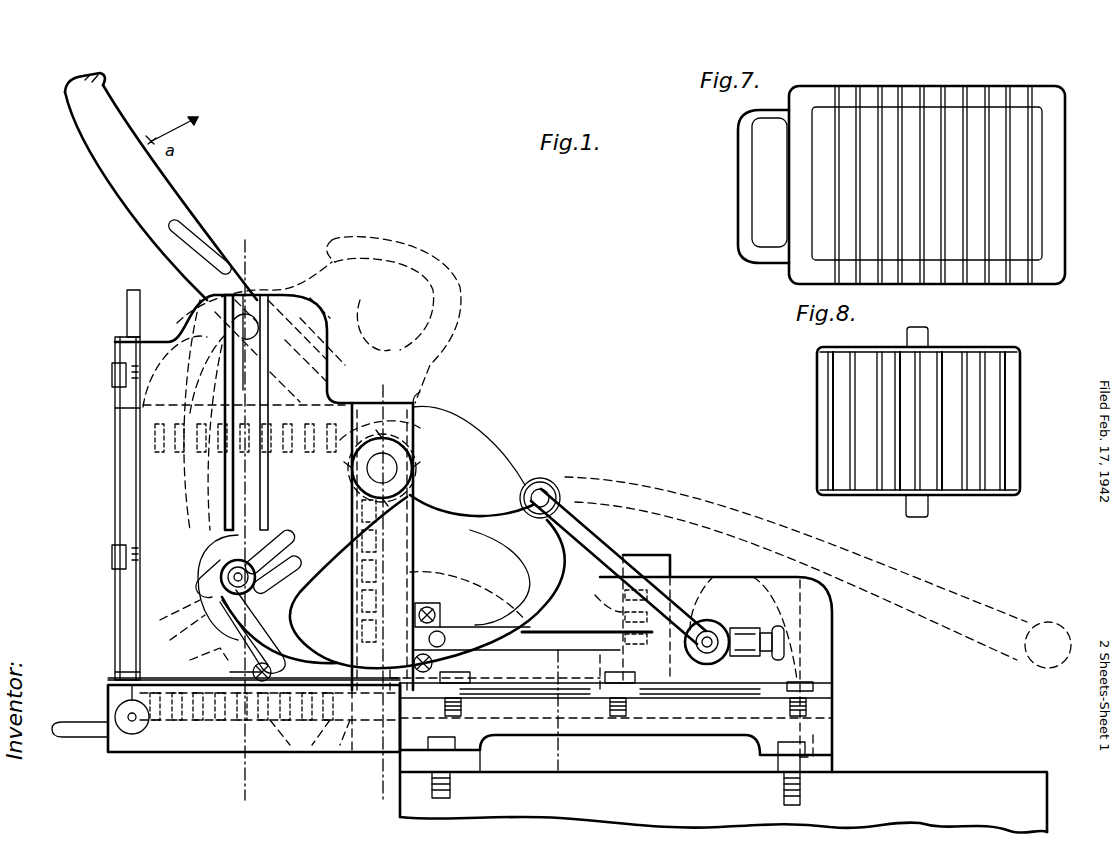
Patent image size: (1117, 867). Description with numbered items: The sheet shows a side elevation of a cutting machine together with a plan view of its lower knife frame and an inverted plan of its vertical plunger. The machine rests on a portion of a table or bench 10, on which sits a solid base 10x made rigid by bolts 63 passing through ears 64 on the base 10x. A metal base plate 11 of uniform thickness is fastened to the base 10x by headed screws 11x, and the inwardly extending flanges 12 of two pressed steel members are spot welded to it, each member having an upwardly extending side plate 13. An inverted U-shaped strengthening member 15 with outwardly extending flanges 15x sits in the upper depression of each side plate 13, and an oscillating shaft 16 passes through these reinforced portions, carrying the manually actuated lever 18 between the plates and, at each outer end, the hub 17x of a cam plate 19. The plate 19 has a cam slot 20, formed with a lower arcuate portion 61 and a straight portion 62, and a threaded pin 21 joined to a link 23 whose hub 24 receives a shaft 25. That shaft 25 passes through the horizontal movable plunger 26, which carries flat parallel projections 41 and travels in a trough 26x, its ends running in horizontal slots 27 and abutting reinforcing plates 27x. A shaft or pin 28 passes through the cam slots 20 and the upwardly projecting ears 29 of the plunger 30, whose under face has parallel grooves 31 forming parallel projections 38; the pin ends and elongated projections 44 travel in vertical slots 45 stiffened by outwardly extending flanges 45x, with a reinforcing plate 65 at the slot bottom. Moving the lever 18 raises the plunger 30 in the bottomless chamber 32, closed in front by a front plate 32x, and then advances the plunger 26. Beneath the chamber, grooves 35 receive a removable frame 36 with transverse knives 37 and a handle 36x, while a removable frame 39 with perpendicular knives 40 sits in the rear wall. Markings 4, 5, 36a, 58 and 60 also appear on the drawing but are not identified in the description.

In FIG. 1, the section line 4 is at (240, 514).
In FIG. 1, the section line 5 is at (382, 584).
In FIG. 1, the table or bench 10 is at (862, 777).
In FIG. 1, the base 10x is at (816, 742).
In FIG. 1, the metal base plate 11 is at (810, 690).
In FIG. 1, the headed screws 11x is at (455, 683).
In FIG. 1, the inwardly extending flanges 12 is at (564, 721).
In FIG. 1, the side plates 13 is at (255, 290).
In FIG. 1, the inverted U-shaped strengthening member 15 is at (426, 420).
In FIG. 1, the outwardly extending flanges 15x is at (414, 405).
In FIG. 1, the oscillating shaft 16 is at (400, 468).
In FIG. 1, the hub 17x is at (430, 478).
In FIG. 1, the manually actuated lever 18 is at (180, 198).
In FIG. 1, the plate 19 is at (195, 575).
In FIG. 1, the cam slot 20 is at (210, 605).
In FIG. 1, the threaded pin 21 is at (560, 490).
In FIG. 1, the link 23 is at (610, 540).
In FIG. 1, the hub 24 is at (707, 620).
In FIG. 1, the shaft 25 is at (708, 640).
In FIG. 1, the horizontal movable plunger 26 is at (672, 566).
In FIG. 1, the trough 26x is at (820, 640).
In FIG. 1, the horizontal slots 27 is at (600, 632).
In FIG. 1, the reinforcing plates 27x is at (425, 600).
In FIG. 1, the shaft or pin 28 is at (225, 565).
In FIG. 1, the upwardly projecting ears 29 is at (178, 620).
In FIG. 1, the plunger 30 is at (125, 672).
In FIG. 8, the plunger 30 is at (817, 440).
In FIG. 1, the parallel grooves 31 is at (310, 745).
In FIG. 8, the parallel grooves 31 is at (850, 400).
In FIG. 1, the bottomless chamber 32 is at (127, 338).
In FIG. 1, the front plate 32x is at (115, 408).
In FIG. 1, the grooves 35 is at (120, 682).
In FIG. 1, the removable frame 36 is at (108, 697).
In FIG. 7, the removable frame 36 is at (1073, 190).
In FIG. 1, the handle 36x is at (85, 748).
In FIG. 7, the handle 36x is at (740, 210).
In FIG. 1, the knob 36a is at (132, 738).
In FIG. 1, the knives 37 is at (190, 725).
In FIG. 7, the knives 37 is at (1010, 178).
In FIG. 1, the parallel projections 38 is at (275, 745).
In FIG. 1, the removable frame 39 is at (378, 752).
In FIG. 1, the knives 40 is at (360, 682).
In FIG. 1, the parallel projections 41 is at (610, 605).
In FIG. 1, the elongated projections 44 is at (215, 665).
In FIG. 8, the elongated projections 44 is at (940, 332).
In FIG. 1, the vertical slots 45 is at (177, 323).
In FIG. 1, the outwardly extending flanges 45x is at (185, 318).
In FIG. 1, the knob 58 is at (765, 640).
In FIG. 1, the clip 60 is at (112, 372).
In FIG. 1, the lower arcuate portion 61 is at (272, 670).
In FIG. 1, the straight portion 62 is at (295, 543).
In FIG. 1, the bolts 63 is at (450, 738).
In FIG. 1, the ears 64 is at (480, 753).
In FIG. 1, the reinforcing plate 65 is at (225, 672).